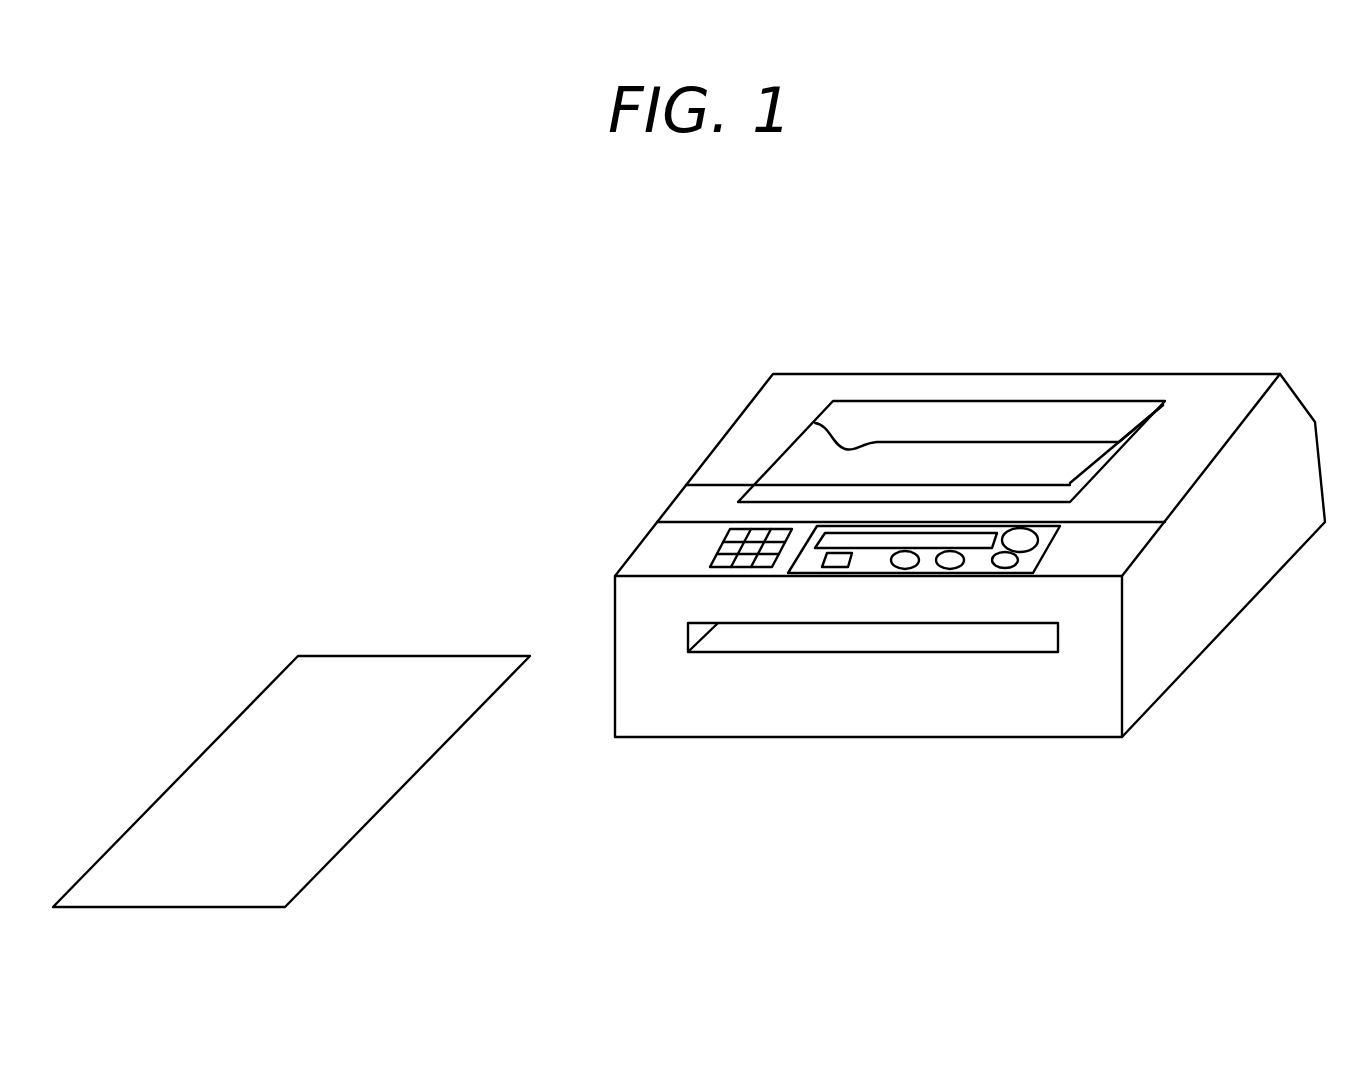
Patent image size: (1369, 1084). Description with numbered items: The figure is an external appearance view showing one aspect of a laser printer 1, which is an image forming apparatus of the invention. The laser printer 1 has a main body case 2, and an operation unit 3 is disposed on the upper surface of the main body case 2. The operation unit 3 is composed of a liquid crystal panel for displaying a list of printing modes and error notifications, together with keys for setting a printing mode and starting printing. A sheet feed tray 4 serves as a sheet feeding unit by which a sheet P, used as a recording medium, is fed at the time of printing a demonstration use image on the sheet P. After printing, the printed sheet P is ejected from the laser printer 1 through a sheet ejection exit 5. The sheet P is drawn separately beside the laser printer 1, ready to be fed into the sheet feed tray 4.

The laser printer 1 is at (922, 292).
The main body case 2 is at (1257, 557).
The operation unit 3 is at (838, 523).
The sheet feed tray 4 is at (848, 637).
The sheet ejection exit 5 is at (1005, 442).
The sheet P is at (352, 815).